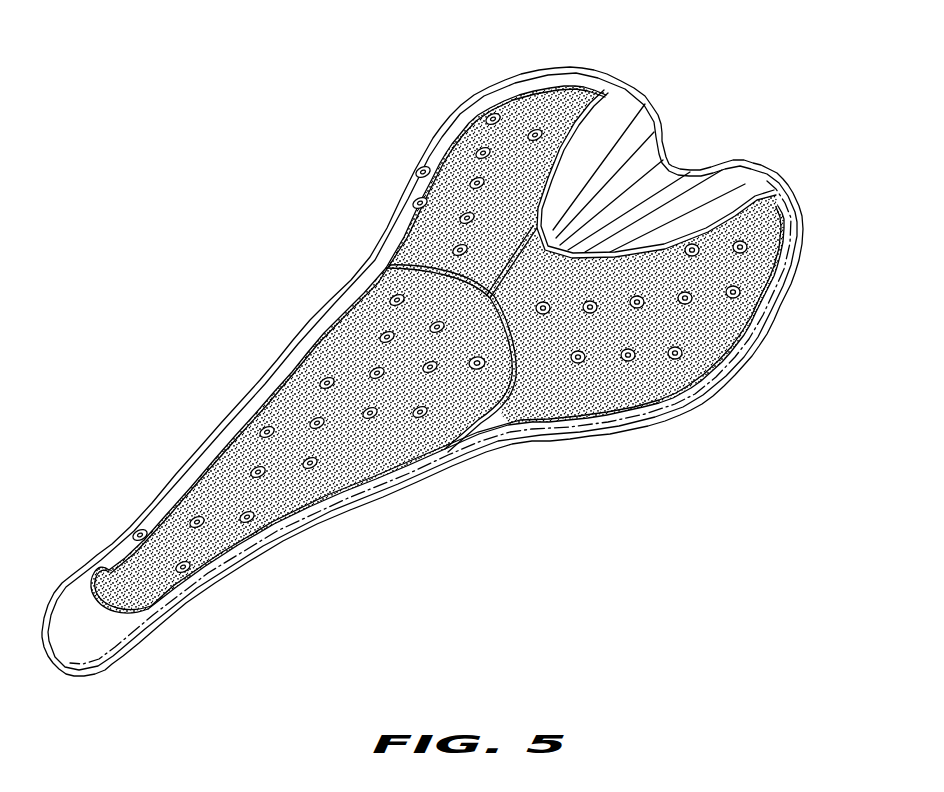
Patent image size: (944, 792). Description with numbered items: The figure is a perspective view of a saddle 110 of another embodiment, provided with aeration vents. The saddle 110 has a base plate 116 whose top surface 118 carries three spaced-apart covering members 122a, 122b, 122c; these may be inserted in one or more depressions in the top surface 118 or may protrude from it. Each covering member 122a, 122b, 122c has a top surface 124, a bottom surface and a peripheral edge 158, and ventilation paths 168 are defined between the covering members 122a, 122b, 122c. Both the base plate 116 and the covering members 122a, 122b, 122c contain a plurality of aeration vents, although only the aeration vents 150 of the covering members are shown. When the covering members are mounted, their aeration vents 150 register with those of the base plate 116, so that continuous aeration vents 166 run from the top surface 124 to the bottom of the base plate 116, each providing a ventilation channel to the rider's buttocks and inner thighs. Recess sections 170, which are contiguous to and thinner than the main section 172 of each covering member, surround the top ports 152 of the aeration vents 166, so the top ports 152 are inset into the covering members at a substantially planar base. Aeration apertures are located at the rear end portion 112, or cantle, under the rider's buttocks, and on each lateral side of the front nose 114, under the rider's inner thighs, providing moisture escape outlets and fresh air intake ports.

The saddle 110 is at (380, 44).
The rear end portion 112 is at (776, 220).
The front nose 114 is at (105, 642).
The base plate 116 is at (708, 392).
The top surface 118 is at (621, 424).
The covering member 122a is at (724, 350).
The covering member 122b is at (546, 108).
The covering member 122c is at (344, 470).
The top surface 124 is at (452, 150).
The aeration vents 150 is at (372, 368).
The top ports 152 is at (205, 470).
The peripheral edge 158 is at (606, 76).
The continuous aeration vents 166 is at (472, 180).
The ventilation paths 168 is at (390, 268).
The recess sections 170 is at (190, 484).
The main section 172 is at (510, 97).